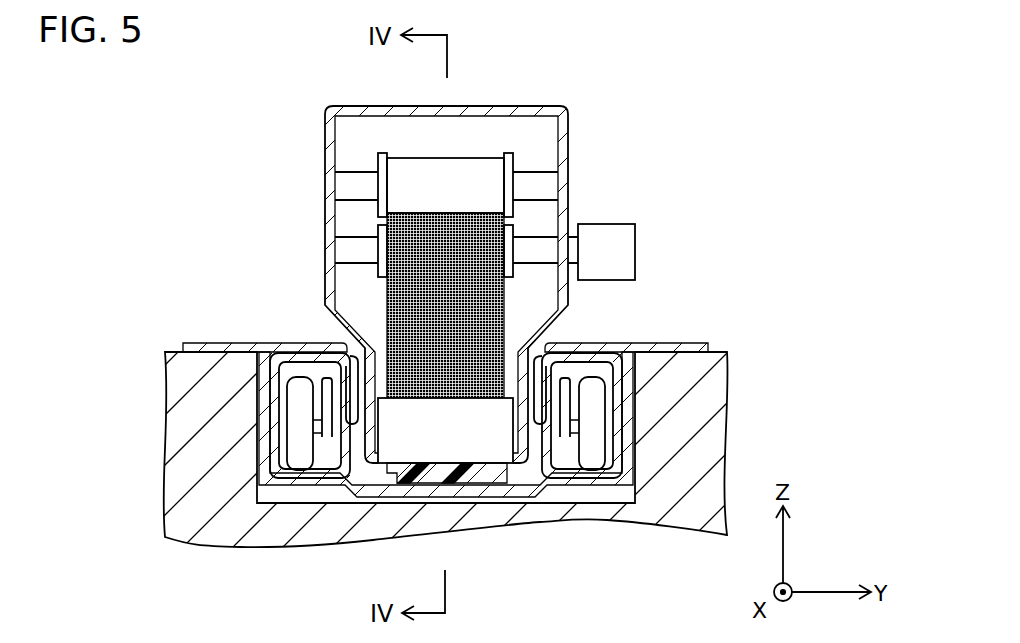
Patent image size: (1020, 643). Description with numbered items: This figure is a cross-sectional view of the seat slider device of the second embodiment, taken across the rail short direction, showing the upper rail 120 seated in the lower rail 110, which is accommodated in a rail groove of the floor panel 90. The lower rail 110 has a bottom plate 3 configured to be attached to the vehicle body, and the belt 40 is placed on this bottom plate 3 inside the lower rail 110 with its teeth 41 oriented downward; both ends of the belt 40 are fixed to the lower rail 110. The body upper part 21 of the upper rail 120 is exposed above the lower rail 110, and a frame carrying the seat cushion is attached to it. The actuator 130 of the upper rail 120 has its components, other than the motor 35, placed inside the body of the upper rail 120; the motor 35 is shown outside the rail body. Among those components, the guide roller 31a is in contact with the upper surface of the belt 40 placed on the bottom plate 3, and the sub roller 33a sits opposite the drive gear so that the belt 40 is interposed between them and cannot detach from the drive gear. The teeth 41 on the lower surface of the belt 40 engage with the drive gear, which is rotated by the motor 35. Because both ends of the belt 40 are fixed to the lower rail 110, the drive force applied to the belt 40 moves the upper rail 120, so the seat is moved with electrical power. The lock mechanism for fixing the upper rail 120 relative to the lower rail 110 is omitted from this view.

The upper rail 120 is at (445, 290).
The body upper part 21 is at (325, 136).
The actuator 130 is at (467, 210).
The sub roller 33a is at (462, 172).
The motor 35 is at (628, 245).
The guide roller 31a is at (383, 398).
The floor panel 90 is at (710, 388).
The lower rail 110 is at (445, 361).
The bottom plate 3 is at (575, 485).
The belt 40 is at (387, 470).
The teeth 41 is at (397, 480).